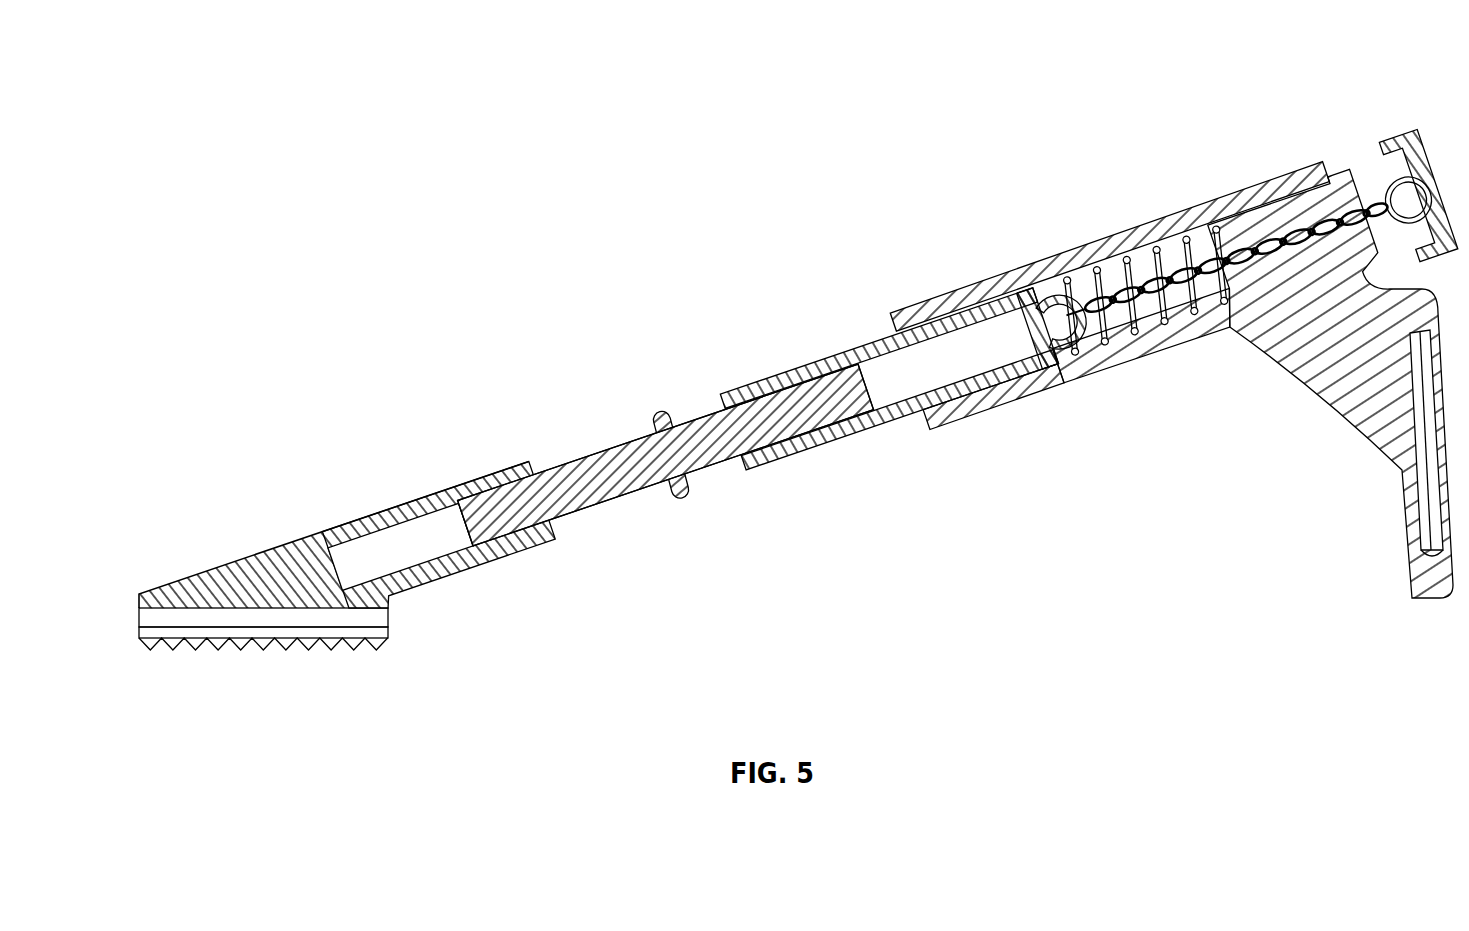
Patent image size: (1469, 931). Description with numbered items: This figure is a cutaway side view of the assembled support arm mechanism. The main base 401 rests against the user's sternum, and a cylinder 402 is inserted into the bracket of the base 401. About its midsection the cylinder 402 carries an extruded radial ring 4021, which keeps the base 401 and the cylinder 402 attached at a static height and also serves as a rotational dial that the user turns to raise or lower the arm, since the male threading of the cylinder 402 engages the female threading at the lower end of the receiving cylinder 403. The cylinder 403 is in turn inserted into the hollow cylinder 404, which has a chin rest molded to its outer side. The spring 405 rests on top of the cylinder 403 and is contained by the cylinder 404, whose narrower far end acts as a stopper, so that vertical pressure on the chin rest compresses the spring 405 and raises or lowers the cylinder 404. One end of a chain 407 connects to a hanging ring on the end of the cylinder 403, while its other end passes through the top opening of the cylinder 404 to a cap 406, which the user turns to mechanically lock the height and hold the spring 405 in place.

The main base 401 is at (184, 659).
The cylinder 402 is at (593, 453).
The extruded radial ring 4021 is at (659, 558).
The cylinder 403 is at (787, 367).
The hollow cylinder component 404 is at (1000, 272).
The spring 405 is at (1153, 250).
The cap 406 is at (1395, 137).
The chain 407 is at (1268, 262).